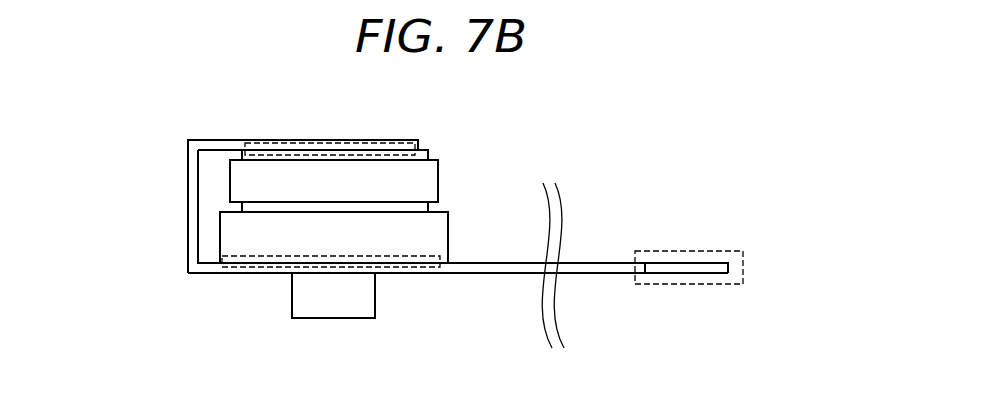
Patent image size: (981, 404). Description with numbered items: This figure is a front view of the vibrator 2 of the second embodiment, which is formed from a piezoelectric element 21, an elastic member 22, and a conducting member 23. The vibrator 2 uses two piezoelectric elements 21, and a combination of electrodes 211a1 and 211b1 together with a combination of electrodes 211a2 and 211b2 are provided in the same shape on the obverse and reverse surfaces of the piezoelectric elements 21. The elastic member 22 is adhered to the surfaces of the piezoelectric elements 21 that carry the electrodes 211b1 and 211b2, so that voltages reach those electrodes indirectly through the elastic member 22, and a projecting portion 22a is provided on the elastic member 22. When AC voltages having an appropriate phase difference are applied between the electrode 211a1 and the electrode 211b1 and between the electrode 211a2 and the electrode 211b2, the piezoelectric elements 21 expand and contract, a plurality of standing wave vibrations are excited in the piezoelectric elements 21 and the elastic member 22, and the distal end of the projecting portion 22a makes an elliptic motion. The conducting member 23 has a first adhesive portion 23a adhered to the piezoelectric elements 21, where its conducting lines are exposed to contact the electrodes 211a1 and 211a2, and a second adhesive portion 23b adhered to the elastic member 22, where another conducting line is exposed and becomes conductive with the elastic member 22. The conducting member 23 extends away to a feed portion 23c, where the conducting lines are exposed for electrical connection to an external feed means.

The vibrator 2 is at (122, 132).
The piezoelectric element 21 is at (230, 168).
The electrode 211a1 is at (262, 145).
The electrode 211a2 is at (339, 118).
The electrode 211b1 is at (240, 206).
The electrode 211b2 is at (262, 204).
The elastic member 22 is at (222, 238).
The projecting portion 22a is at (337, 320).
The conducting member 23 is at (609, 262).
The first adhesive portion 23a is at (392, 143).
The second adhesive portion 23b is at (247, 277).
The feed portion 23c is at (712, 250).